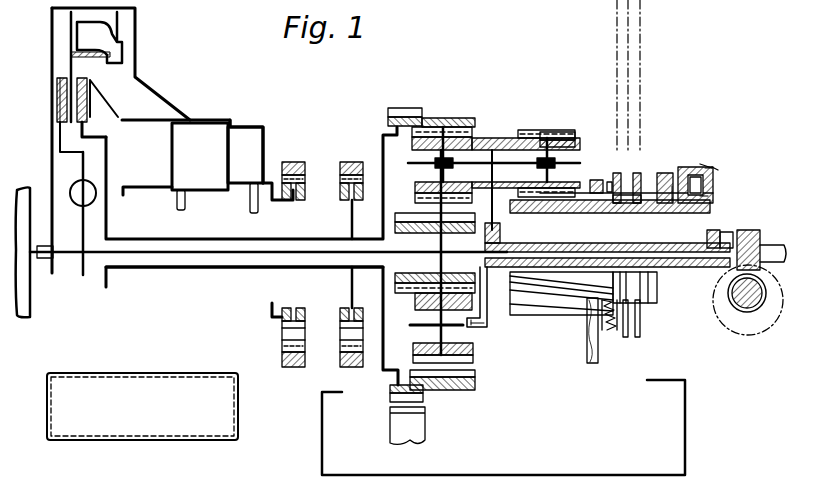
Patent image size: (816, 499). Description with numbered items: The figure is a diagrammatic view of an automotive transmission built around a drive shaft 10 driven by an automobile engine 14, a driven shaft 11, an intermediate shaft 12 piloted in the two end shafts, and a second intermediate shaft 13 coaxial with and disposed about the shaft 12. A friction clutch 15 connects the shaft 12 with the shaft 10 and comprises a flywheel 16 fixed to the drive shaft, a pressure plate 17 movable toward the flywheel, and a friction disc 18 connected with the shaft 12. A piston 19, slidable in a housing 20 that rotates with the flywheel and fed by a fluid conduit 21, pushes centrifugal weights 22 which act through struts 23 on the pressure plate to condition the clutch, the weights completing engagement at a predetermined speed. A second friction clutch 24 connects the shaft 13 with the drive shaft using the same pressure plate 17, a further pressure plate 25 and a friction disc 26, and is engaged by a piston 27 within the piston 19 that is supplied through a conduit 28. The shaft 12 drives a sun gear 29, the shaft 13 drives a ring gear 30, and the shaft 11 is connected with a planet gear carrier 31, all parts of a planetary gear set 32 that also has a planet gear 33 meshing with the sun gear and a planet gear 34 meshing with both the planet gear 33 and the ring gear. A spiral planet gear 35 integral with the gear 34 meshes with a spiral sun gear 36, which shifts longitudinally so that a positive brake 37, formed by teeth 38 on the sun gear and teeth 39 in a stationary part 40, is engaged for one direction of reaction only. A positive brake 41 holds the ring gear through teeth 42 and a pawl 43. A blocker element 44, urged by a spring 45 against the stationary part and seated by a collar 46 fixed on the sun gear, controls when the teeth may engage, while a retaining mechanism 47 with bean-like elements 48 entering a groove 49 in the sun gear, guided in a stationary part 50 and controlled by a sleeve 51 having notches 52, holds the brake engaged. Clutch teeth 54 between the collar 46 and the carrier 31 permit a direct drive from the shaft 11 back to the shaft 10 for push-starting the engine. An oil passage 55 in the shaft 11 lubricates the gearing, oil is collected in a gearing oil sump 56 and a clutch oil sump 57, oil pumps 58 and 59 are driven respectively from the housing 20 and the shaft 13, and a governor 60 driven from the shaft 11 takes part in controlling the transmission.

The drive shaft 10 is at (32, 255).
The driven shaft 11 is at (778, 248).
The intermediate shaft 12 is at (97, 258).
The second intermediate shaft 13 is at (210, 270).
The automobile engine 14 is at (30, 315).
The friction clutch 15 is at (58, 72).
The flywheel 16 is at (52, 48).
The pressure plate 17 is at (71, 30).
The friction disc 18 is at (57, 96).
The piston 19 is at (230, 160).
The housing 20 is at (250, 126).
The fluid conduit 21 is at (258, 208).
The centrifugal weights 22 is at (95, 32).
The strut 23 is at (90, 57).
The friction clutch 24 is at (108, 130).
The pressure plate 25 is at (93, 104).
The friction disc 26 is at (77, 108).
The piston 27 is at (172, 141).
The conduit 28 is at (185, 205).
The sun gear 29 is at (402, 215).
The ring gear 30 is at (460, 118).
The planet gear carrier 31 is at (508, 138).
The planetary gear set 32 is at (490, 130).
The planet gear 33 is at (473, 352).
The planet gear 34 is at (434, 128).
The planet gear 35 is at (555, 132).
The spiral sun gear 36 is at (530, 315).
The positive brake 37 is at (672, 212).
The teeth 38 is at (664, 173).
The teeth 39 is at (684, 206).
The stationary part 40 is at (684, 170).
The positive brake 41 is at (433, 400).
The teeth 42 is at (396, 108).
The pawl 43 is at (425, 432).
The blocker element 44 is at (672, 158).
The spring 45 is at (668, 172).
The collar 46 is at (622, 203).
The retaining mechanism 47 is at (716, 166).
The bean-like elements 48 is at (708, 178).
The groove 49 is at (705, 200).
The stationary part 50 is at (712, 193).
The sleeve 51 is at (706, 165).
The notches 52 is at (730, 171).
The clutch teeth 54 is at (594, 180).
The oil passage 55 is at (582, 258).
The gearing oil sump 56 is at (685, 428).
The oil sump 57 is at (152, 406).
The oil pump 58 is at (293, 160).
The oil pump 59 is at (351, 160).
The governor 60 is at (723, 314).